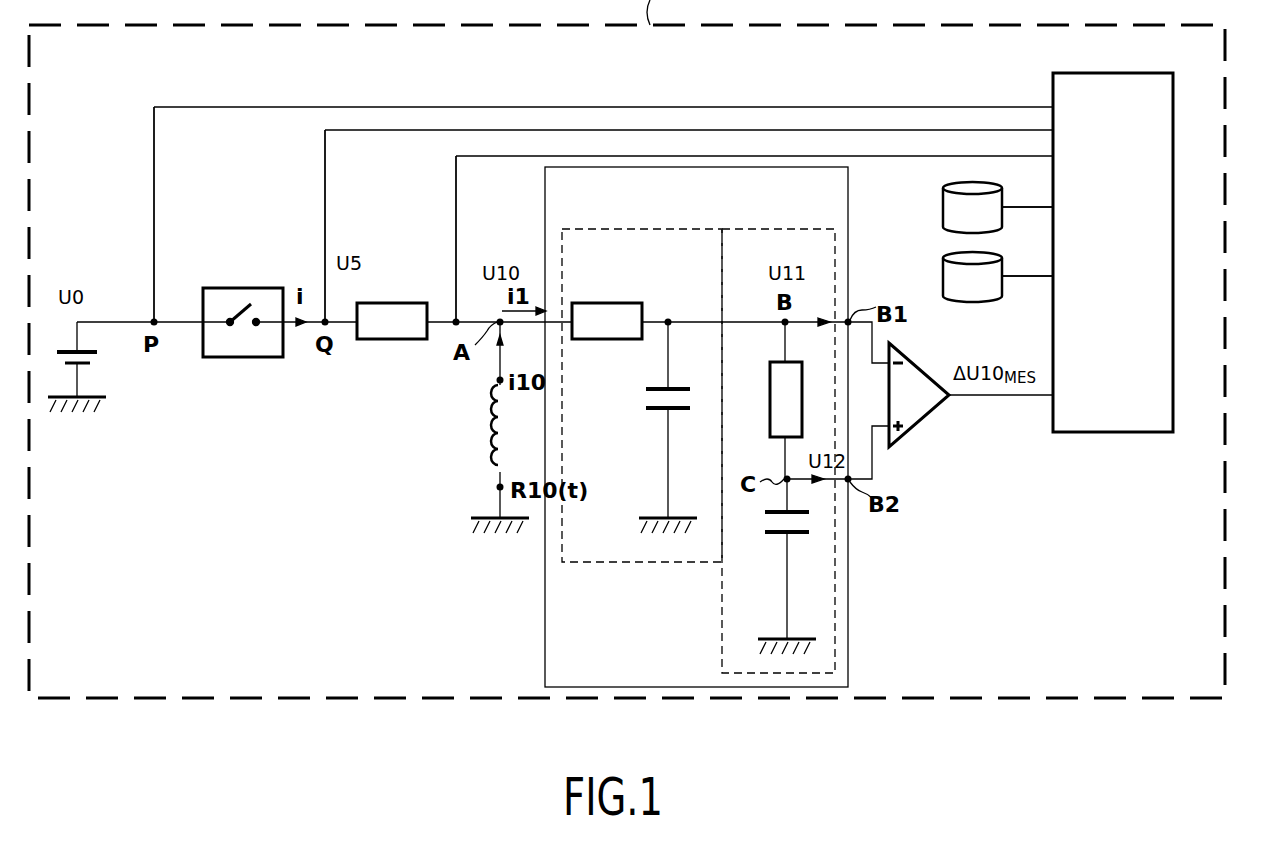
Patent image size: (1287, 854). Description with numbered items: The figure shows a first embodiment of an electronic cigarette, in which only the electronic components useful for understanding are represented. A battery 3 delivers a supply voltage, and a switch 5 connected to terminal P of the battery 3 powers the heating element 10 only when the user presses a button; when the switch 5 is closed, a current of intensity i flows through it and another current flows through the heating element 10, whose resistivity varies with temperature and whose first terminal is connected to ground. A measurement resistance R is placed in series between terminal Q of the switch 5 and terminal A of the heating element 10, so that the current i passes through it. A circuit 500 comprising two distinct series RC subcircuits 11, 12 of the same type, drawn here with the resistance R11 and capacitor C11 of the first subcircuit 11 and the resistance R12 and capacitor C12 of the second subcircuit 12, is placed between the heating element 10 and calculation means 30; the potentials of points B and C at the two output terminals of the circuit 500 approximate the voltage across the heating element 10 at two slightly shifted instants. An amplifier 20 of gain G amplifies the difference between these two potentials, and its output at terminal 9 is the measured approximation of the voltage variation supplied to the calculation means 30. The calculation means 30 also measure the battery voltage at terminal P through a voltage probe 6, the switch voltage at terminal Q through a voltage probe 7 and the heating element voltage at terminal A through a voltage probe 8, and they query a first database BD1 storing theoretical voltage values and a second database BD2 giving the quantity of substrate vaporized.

The battery 3 is at (100, 352).
The switch 5 is at (243, 288).
The voltage probe 6 is at (154, 186).
The voltage probe 7 is at (325, 186).
The voltage probe 8 is at (456, 192).
The terminal 9 is at (995, 397).
The heating element 10 is at (491, 432).
The first series RC subcircuit 11 is at (640, 229).
The second series RC subcircuit 12 is at (783, 229).
The amplifier 20 is at (920, 424).
The calculation means 30 is at (1126, 275).
The circuit 500 is at (545, 628).
The first database BD1 is at (943, 207).
The second database BD2 is at (943, 276).
The measurement resistance R is at (391, 339).
The resistor of first filter R11 is at (622, 339).
The resistor of second filter R12 is at (770, 400).
The capacitor of first filter C11 is at (685, 408).
The capacitor of second filter C12 is at (803, 532).